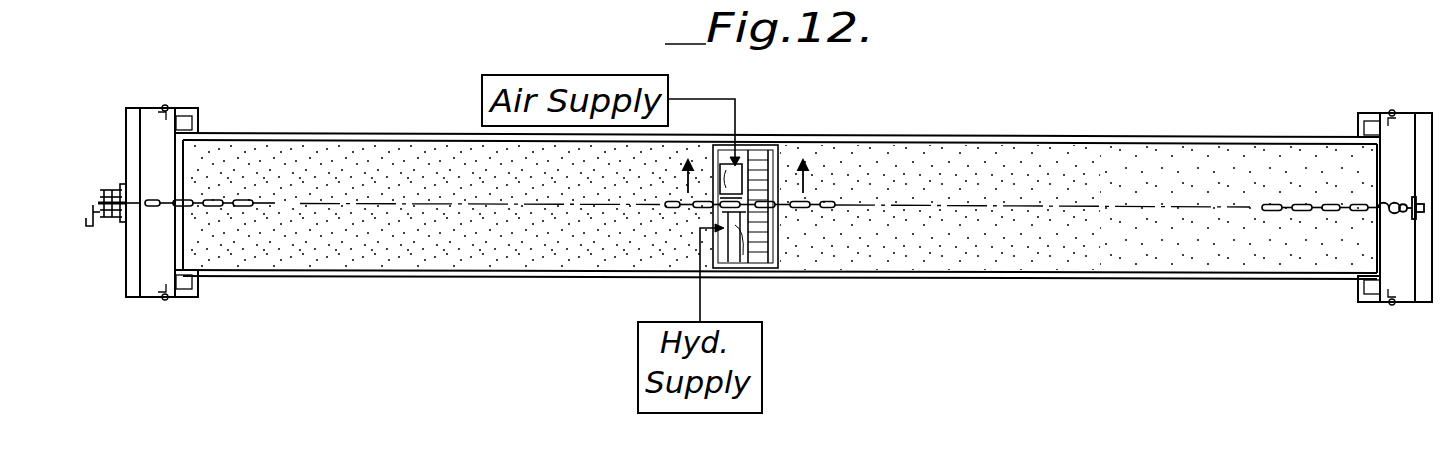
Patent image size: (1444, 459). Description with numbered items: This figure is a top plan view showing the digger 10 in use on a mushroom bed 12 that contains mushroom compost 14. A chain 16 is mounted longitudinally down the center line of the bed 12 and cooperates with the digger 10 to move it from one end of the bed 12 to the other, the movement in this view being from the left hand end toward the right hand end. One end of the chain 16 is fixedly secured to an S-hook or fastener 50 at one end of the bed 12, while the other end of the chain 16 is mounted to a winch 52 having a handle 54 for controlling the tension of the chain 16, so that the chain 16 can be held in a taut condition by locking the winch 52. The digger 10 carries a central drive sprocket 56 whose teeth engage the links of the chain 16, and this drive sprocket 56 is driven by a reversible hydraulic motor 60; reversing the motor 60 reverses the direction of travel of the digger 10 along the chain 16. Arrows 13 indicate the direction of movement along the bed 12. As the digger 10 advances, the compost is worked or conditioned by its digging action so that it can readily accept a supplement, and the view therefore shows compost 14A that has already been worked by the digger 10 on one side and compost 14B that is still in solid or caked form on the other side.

The digger 10 is at (774, 134).
The mushroom bed 12 is at (1137, 278).
The flow direction arrows 13 is at (714, 223).
The mushroom compost 14 is at (895, 245).
The worked compost 14A is at (490, 243).
The caked compost 14B is at (1210, 238).
The chain 16 is at (185, 203).
The S-hook 50 is at (1385, 217).
The winch 52 is at (100, 193).
The handle 54 is at (93, 228).
The central drive sprocket 56 is at (743, 266).
The hydraulic motor 60 is at (732, 232).